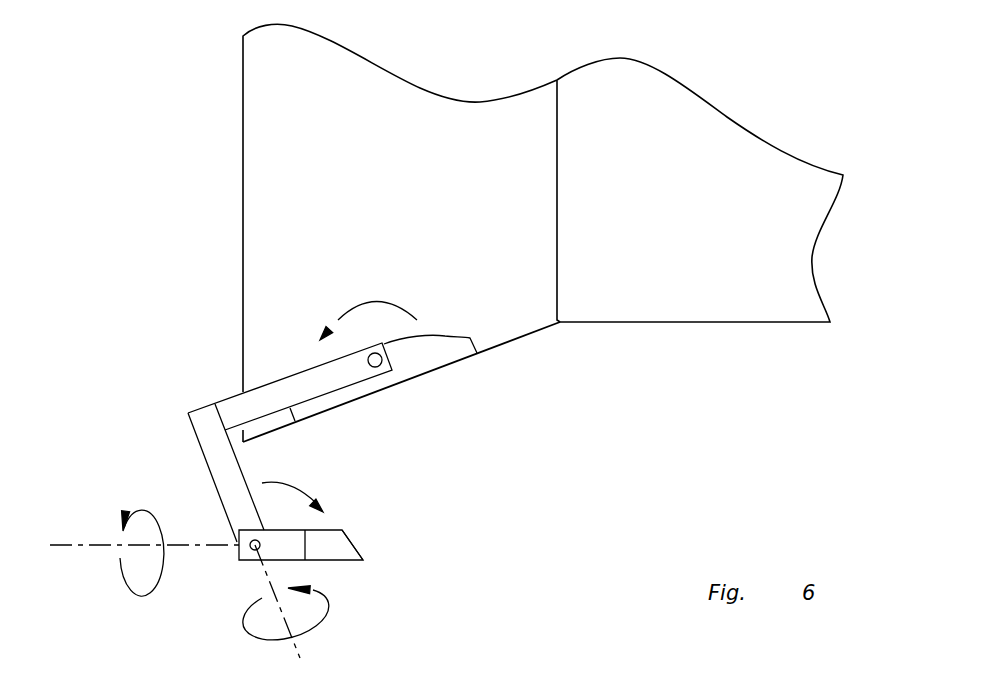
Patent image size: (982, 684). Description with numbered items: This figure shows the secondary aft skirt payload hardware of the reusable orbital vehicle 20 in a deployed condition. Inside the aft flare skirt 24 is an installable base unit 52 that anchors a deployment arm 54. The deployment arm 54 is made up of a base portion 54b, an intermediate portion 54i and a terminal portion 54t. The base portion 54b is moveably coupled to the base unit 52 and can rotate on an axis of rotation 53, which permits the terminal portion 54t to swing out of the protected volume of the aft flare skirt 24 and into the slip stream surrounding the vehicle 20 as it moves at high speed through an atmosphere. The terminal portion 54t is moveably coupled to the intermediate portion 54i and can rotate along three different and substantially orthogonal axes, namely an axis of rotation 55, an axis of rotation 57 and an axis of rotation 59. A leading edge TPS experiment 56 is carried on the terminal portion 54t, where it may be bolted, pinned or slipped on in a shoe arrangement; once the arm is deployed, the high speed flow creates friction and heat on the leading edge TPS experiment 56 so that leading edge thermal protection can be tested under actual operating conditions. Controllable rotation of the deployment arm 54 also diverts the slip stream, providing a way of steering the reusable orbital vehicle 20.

The reusable orbital vehicle 20 is at (625, 322).
The aft flare skirt 24 is at (523, 338).
The base unit 52 is at (427, 357).
The axis of rotation 53 is at (377, 367).
The deployment arm 54 is at (182, 326).
The deployment arm base portion 54b is at (280, 378).
The deployment arm intermediate portion 54i is at (198, 454).
The deployment arm terminal portion 54t is at (338, 562).
The axis of rotation 55 is at (60, 545).
The leading edge TPS experiment 56 is at (350, 538).
The axis of rotation 57 is at (297, 648).
The axis of rotation 59 is at (254, 551).